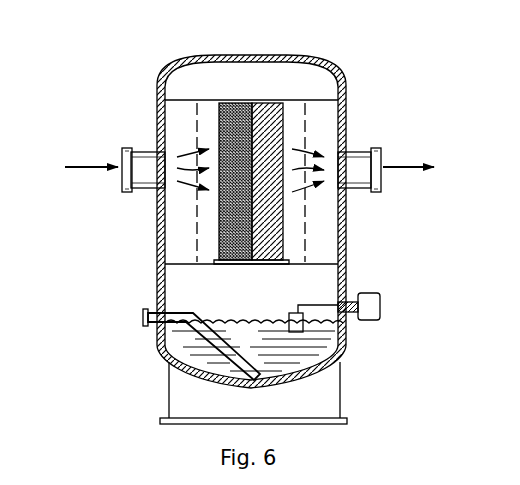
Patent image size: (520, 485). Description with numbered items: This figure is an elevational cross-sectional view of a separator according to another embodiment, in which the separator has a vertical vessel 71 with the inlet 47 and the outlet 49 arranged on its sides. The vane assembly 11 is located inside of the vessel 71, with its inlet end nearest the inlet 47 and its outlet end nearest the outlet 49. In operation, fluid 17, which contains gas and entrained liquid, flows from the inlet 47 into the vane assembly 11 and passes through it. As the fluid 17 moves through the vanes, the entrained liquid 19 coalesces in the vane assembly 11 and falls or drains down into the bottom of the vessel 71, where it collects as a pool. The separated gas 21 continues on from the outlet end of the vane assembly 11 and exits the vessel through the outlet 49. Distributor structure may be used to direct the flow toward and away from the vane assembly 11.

The vertical vessel 71 is at (283, 58).
The vane assembly 11 is at (260, 102).
The inlet 47 is at (129, 148).
The fluid 17 is at (94, 168).
The outlet 49 is at (372, 148).
The gas 21 is at (407, 168).
The liquid 19 is at (322, 352).